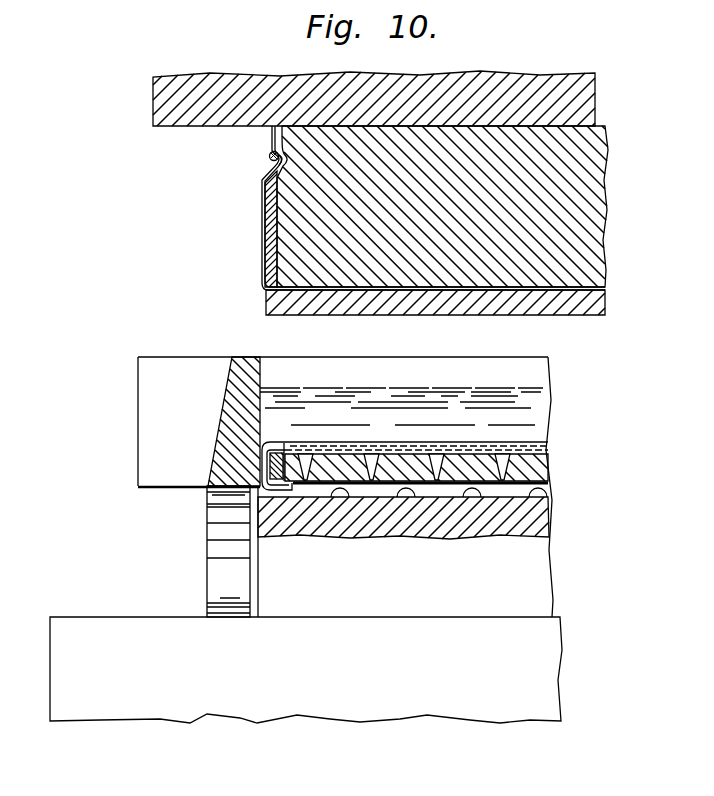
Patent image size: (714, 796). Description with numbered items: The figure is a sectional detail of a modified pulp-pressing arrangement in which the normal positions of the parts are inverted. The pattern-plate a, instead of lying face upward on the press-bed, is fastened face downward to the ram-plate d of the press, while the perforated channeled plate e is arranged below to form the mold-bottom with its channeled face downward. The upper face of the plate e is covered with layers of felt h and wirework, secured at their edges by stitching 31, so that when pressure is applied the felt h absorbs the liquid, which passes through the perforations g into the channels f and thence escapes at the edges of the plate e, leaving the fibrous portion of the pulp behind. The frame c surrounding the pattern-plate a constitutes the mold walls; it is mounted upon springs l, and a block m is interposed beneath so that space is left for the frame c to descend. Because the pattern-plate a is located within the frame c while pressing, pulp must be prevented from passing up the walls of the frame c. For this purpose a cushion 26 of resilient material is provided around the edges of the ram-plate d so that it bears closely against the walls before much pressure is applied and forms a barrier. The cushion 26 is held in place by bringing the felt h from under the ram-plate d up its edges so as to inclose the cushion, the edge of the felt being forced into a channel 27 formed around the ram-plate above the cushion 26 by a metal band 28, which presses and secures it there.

The pattern-plate a is at (379, 193).
The ram-plate d is at (442, 206).
The felt h is at (258, 268).
The cushion 26 is at (270, 243).
The channel 27 is at (288, 158).
The band 28 is at (269, 157).
The frame c is at (238, 398).
The stitching 31 is at (274, 462).
The perforated channeled plate e is at (542, 474).
The perforations g is at (372, 472).
The channels f is at (503, 488).
The block m is at (421, 520).
The springs l is at (213, 551).